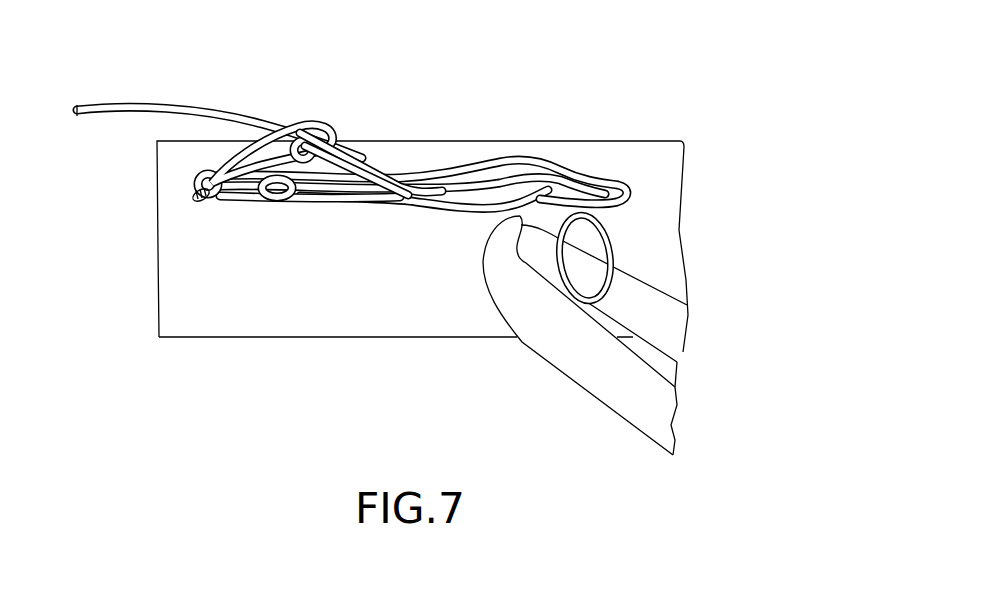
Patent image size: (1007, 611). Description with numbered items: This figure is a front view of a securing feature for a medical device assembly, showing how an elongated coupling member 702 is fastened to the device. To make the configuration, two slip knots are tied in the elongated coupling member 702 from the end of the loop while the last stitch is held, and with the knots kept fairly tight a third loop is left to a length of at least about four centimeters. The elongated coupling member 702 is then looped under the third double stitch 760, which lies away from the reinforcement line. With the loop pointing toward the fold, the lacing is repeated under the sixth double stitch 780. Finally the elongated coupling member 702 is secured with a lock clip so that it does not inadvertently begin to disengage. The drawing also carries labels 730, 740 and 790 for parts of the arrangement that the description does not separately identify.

The elongated coupling member 702 is at (366, 143).
The suture tail end 730 is at (210, 138).
The first loop of suture knot 740 is at (281, 102).
The third double stitch 760 is at (346, 214).
The sixth double stitch 780 is at (503, 238).
The band strip passed through loop 790 is at (548, 373).